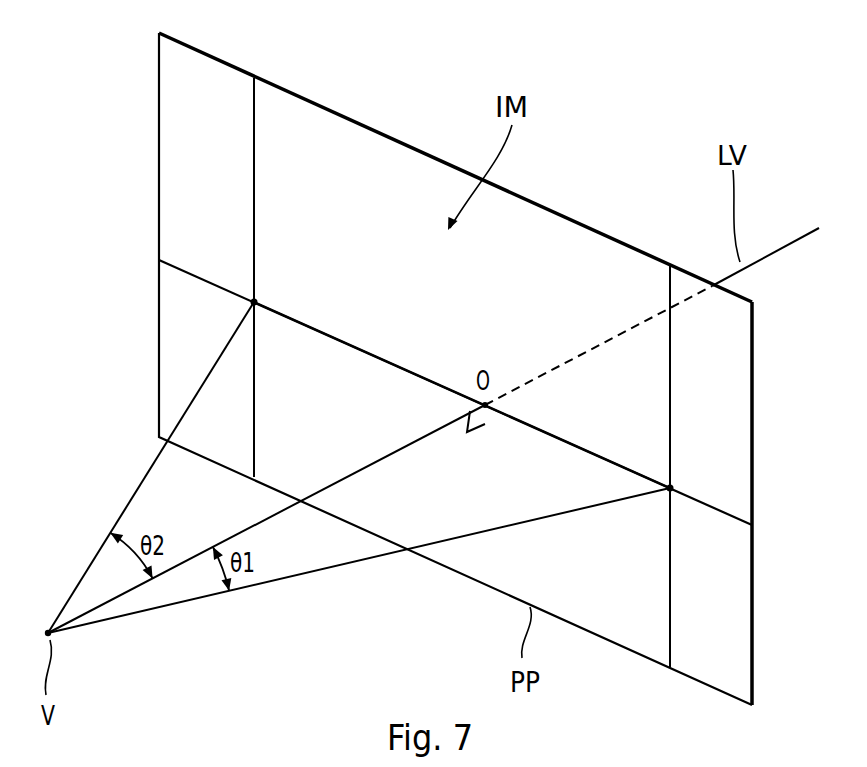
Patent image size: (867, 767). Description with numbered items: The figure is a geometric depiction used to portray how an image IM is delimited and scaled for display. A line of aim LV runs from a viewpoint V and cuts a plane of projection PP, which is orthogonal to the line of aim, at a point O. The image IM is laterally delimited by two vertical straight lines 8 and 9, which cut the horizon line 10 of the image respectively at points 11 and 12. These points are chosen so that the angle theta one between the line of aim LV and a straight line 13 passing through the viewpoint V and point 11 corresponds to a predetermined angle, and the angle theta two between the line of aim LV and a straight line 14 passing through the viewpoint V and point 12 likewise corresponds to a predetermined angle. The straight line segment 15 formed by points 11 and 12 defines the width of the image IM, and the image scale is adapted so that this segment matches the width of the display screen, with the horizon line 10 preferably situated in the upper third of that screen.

The vertical straight line 8 is at (672, 378).
The vertical straight line 9 is at (254, 143).
The horizon line 10 is at (201, 260).
The point 11 is at (675, 488).
The point 12 is at (255, 302).
The straight line 13 is at (301, 578).
The straight line 14 is at (132, 495).
The straight line segment 15 is at (402, 362).